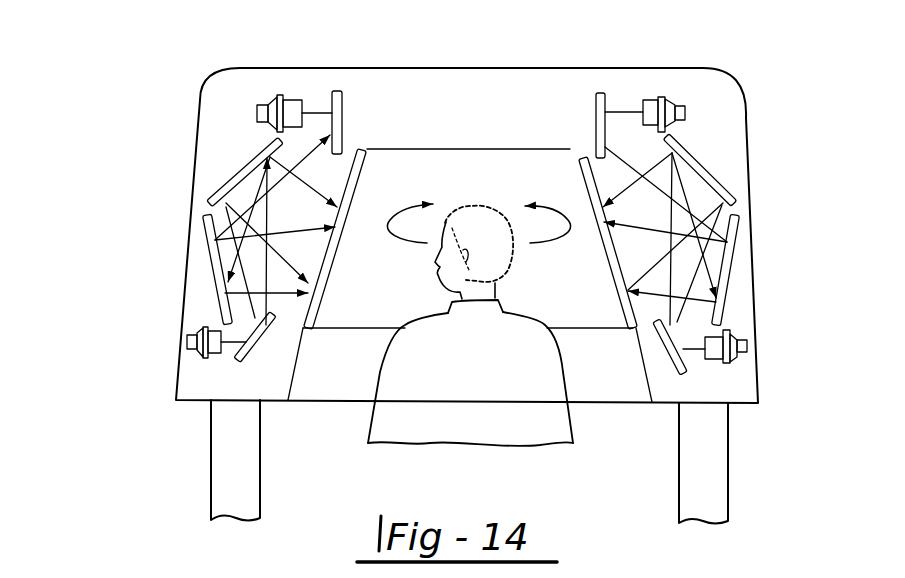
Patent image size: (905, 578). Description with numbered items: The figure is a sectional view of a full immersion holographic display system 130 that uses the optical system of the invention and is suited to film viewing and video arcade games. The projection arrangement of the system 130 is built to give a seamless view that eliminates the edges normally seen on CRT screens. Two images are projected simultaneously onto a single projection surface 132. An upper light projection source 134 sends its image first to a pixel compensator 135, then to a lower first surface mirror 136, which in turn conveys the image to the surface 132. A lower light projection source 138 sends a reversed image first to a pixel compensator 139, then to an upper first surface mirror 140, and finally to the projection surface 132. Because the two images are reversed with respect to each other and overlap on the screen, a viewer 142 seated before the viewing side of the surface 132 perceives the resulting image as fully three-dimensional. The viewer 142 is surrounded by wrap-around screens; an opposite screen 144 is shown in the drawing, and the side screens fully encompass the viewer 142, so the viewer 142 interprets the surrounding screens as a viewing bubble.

The full immersion holographic display system 130 is at (158, 193).
The projection surface 132 is at (330, 270).
The upper light projection source 134 is at (290, 104).
The pixel compensator 135 is at (342, 128).
The lower first surface mirror 136 is at (202, 262).
The lower light projection source 138 is at (202, 333).
The pixel compensator 139 is at (247, 362).
The upper first surface mirror 140 is at (232, 191).
The viewer 142 is at (485, 398).
The opposite screen 144 is at (588, 199).